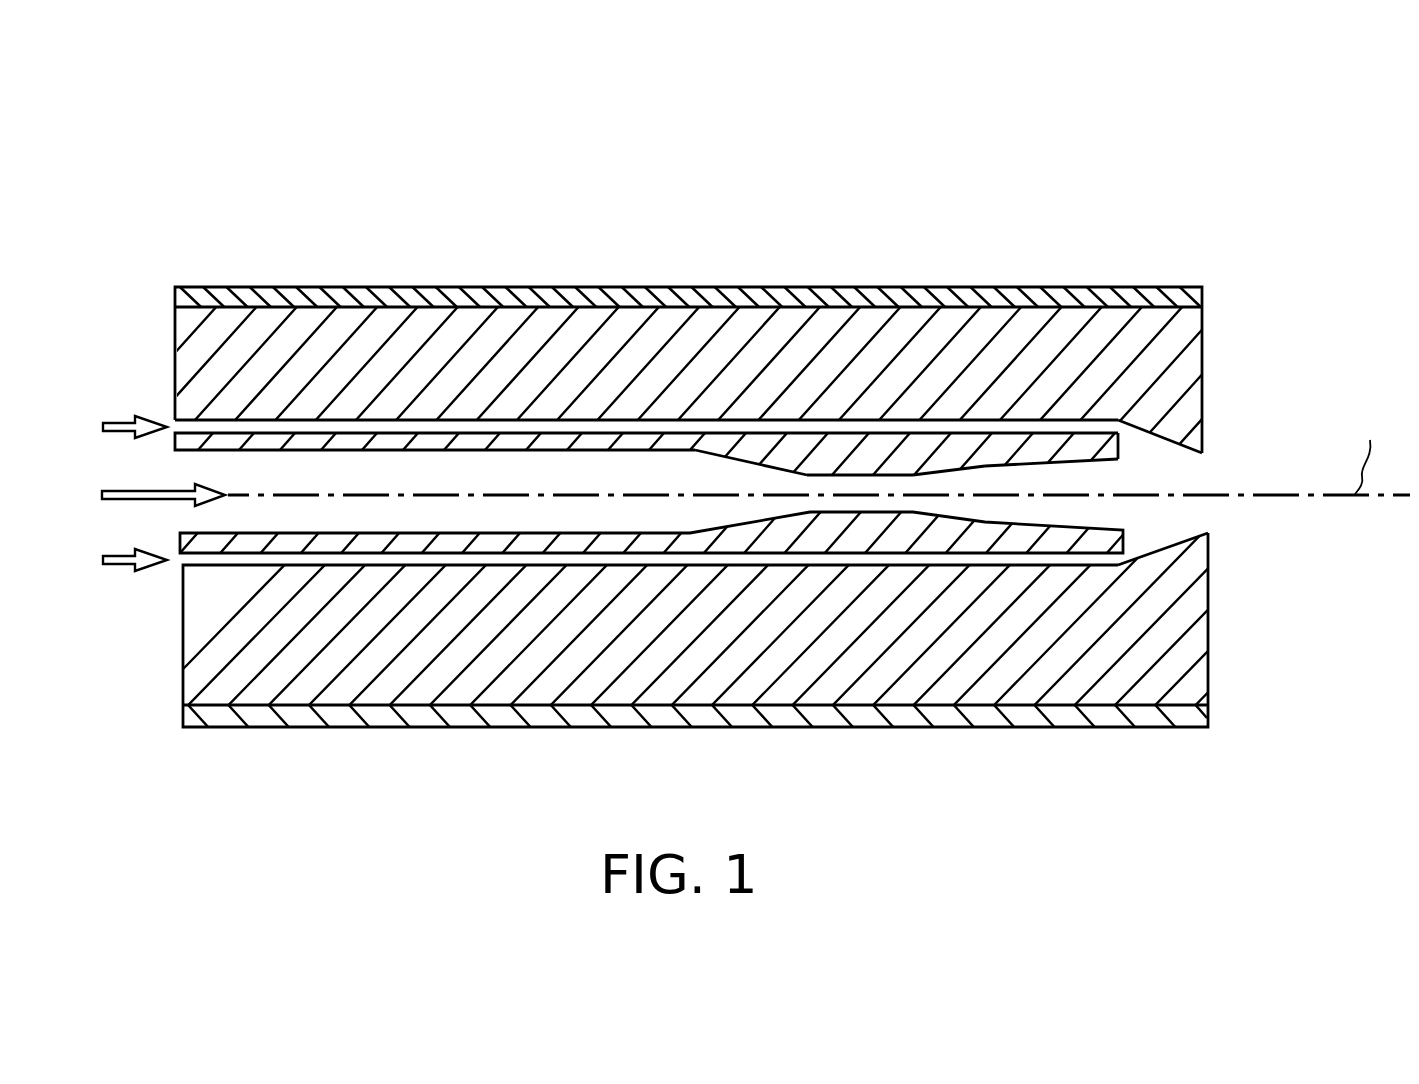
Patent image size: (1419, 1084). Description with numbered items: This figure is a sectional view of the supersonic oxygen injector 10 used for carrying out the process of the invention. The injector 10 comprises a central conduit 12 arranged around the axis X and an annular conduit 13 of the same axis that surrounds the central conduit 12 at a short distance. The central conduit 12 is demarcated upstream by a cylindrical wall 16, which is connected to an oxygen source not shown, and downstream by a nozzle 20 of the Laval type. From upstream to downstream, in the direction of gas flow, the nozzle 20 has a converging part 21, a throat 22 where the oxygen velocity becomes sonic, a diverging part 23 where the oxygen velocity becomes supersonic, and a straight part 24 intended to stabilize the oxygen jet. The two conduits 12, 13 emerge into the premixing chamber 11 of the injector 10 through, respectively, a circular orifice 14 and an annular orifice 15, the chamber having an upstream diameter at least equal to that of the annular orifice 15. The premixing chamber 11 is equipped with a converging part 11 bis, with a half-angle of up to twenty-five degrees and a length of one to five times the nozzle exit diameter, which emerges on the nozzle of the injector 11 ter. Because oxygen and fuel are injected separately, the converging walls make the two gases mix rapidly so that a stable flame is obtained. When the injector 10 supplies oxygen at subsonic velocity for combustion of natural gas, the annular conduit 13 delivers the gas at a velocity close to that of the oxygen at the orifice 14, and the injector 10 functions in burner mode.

The injector 10 is at (979, 250).
The premixing chamber 11 is at (1164, 469).
The converging part 11 bis is at (1168, 437).
The nozzle of the injector 11 ter is at (1225, 512).
The central conduit 12 is at (280, 470).
The annular conduit 13 is at (455, 558).
The circular orifice 14 is at (1055, 511).
The annular orifice 15 is at (1125, 556).
The cylindrical wall 16 is at (437, 449).
The nozzle 20 is at (893, 718).
The converging part 21 is at (745, 462).
The throat 22 is at (843, 478).
The diverging part 23 is at (992, 462).
The straight part 24 is at (1094, 460).